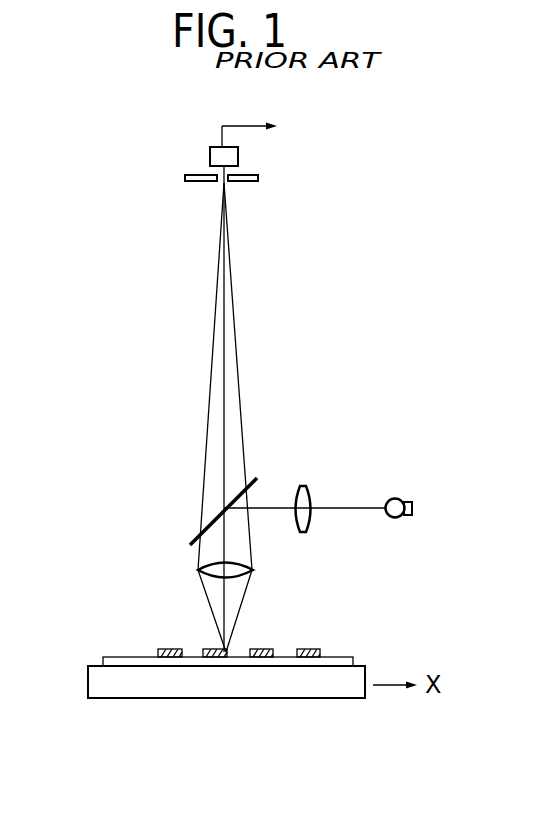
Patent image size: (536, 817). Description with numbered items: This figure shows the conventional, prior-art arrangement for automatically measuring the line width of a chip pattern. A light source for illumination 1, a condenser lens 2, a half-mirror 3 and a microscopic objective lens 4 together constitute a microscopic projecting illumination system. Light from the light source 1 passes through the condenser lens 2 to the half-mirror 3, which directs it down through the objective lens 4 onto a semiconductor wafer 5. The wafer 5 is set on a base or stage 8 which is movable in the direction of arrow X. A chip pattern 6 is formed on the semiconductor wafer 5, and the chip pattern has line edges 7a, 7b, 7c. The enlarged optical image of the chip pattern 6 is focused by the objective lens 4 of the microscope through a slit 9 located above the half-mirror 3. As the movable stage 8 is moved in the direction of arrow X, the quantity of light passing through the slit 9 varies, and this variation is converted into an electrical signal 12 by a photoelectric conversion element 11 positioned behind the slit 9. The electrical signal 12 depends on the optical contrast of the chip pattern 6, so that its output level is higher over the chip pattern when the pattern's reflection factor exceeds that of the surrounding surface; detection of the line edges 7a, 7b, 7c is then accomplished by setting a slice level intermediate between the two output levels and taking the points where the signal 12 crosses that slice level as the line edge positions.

The light source for illumination 1 is at (395, 498).
The condenser lens 2 is at (303, 486).
The half-mirror 3 is at (252, 478).
The microscopic objective lens 4 is at (242, 572).
The semiconductor wafer 5 is at (348, 657).
The chip pattern 6 is at (310, 649).
The line edge 7a is at (203, 650).
The line edge 7b is at (226, 652).
The line edge 7c is at (248, 650).
The stage 8 is at (103, 682).
The slit 9 is at (247, 183).
The photoelectric conversion element 11 is at (210, 155).
The electrical signal 12 is at (245, 125).